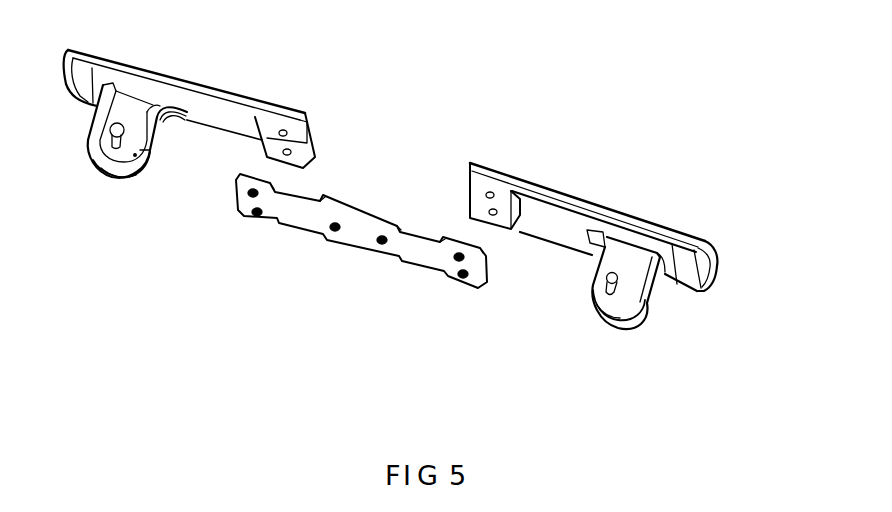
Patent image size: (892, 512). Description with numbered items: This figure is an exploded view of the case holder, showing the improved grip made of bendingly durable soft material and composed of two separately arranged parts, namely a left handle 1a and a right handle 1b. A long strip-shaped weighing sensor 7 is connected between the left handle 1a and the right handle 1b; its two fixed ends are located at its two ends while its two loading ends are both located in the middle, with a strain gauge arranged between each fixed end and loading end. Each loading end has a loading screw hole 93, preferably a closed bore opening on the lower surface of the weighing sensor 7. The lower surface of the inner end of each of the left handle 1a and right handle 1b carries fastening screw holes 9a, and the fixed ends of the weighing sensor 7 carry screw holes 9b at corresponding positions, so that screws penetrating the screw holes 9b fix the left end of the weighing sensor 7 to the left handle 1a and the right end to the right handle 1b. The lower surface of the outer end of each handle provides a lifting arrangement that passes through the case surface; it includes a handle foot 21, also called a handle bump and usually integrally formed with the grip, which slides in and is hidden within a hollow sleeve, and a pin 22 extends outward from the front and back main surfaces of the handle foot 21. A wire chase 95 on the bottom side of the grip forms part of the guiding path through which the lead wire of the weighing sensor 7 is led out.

The left handle 1a is at (189, 138).
The right handle 1b is at (613, 252).
The weighing sensor 7 is at (393, 255).
The fastening screw holes 9a is at (495, 210).
The screw holes 9b is at (466, 274).
The handle foot 21 is at (643, 281).
The pin 22 is at (617, 286).
The loading screw hole 93 is at (383, 243).
The wire chase 95 is at (197, 123).